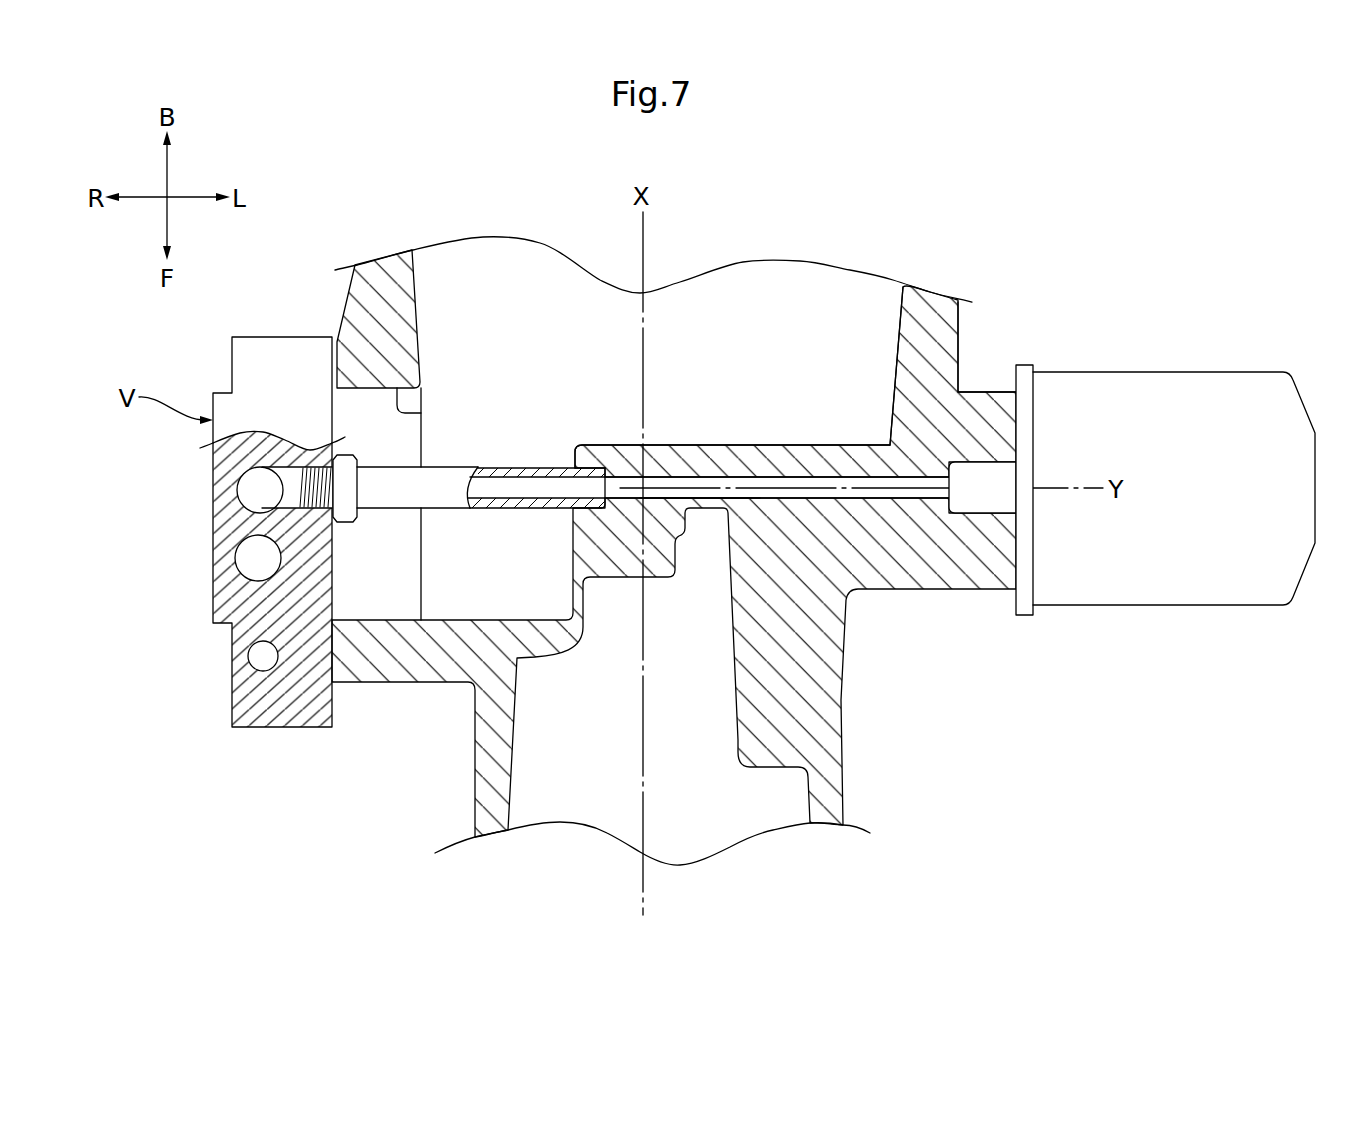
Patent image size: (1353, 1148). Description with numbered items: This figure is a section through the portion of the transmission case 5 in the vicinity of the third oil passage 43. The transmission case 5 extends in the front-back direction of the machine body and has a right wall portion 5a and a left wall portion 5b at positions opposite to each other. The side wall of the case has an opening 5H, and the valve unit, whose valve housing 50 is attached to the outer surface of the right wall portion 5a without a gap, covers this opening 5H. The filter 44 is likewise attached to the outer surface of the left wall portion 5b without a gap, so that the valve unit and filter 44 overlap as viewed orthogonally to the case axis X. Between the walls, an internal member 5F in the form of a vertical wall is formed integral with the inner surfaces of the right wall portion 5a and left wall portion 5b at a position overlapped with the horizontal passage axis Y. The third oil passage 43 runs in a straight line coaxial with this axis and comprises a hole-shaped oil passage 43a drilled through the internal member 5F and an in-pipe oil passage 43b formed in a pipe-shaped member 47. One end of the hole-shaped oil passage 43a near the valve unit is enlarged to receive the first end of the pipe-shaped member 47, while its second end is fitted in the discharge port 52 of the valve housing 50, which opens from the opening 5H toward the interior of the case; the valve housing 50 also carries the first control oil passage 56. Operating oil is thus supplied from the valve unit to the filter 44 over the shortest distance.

The transmission case 5 is at (852, 646).
The right wall portion 5a is at (342, 310).
The left wall portion 5b is at (960, 338).
The internal member 5F is at (692, 452).
The opening 5H is at (415, 410).
The third oil passage 43 is at (808, 476).
The hole-shaped oil passage 43a is at (697, 494).
The in-pipe oil passage 43b is at (517, 480).
The filter 44 is at (1148, 377).
The pipe-shaped member 47 is at (437, 502).
The valve housing 50 is at (218, 607).
The discharge port 52 is at (288, 491).
The first control oil passage 56 is at (262, 656).